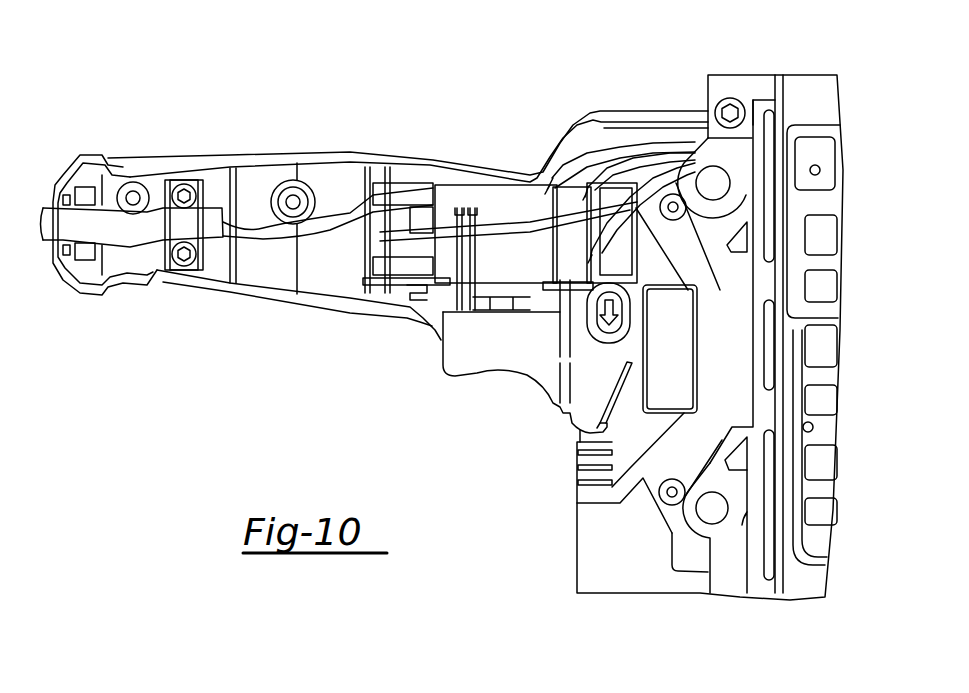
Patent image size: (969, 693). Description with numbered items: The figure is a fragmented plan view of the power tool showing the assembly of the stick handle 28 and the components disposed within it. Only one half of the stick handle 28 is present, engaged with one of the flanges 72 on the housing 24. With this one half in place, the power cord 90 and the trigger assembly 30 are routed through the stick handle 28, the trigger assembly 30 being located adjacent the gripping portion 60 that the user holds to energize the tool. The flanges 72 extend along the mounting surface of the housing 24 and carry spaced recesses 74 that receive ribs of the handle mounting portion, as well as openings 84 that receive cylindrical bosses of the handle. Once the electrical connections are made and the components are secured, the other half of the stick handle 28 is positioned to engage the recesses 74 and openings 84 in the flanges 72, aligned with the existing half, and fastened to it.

The housing 24 is at (727, 92).
The stick handle 28 is at (347, 158).
The trigger assembly 30 is at (448, 397).
The gripping portion 60 is at (435, 160).
The flanges 72 is at (682, 538).
The recesses 74 is at (768, 209).
The openings 84 is at (720, 507).
The power cord 90 is at (146, 230).